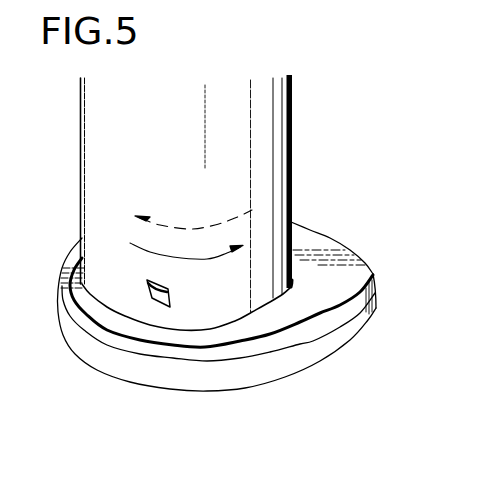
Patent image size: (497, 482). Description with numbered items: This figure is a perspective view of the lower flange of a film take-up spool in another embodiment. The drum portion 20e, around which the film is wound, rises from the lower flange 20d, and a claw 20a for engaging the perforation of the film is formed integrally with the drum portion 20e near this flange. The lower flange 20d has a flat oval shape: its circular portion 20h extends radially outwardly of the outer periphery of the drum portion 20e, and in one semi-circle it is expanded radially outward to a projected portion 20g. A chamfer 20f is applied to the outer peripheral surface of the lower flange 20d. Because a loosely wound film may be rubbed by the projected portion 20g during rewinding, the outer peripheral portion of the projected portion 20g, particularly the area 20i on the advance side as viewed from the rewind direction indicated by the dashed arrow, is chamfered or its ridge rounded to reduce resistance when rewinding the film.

The claw 20a is at (153, 298).
The lower flange 20d is at (278, 376).
The drum portion 20e is at (93, 165).
The chamfer 20f is at (141, 348).
The projected portion 20g is at (347, 275).
The circular portion 20h is at (196, 341).
The area of the advance direction 20i is at (358, 294).